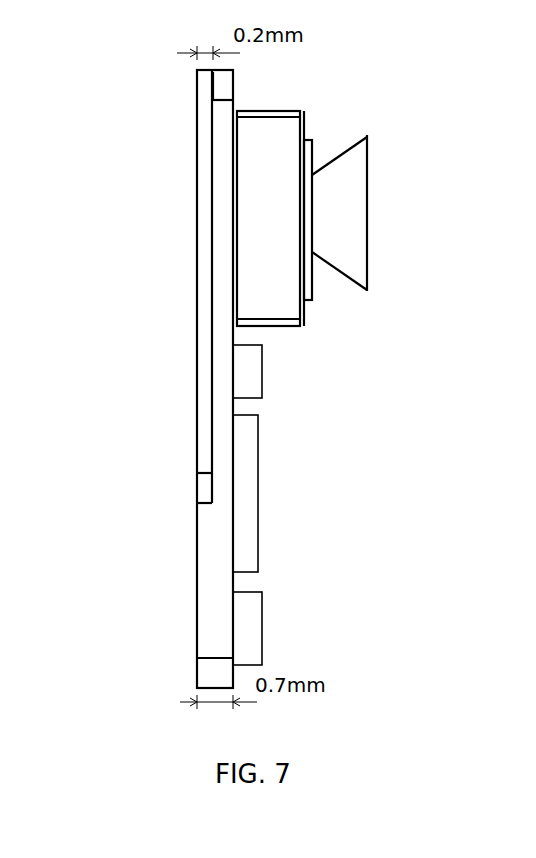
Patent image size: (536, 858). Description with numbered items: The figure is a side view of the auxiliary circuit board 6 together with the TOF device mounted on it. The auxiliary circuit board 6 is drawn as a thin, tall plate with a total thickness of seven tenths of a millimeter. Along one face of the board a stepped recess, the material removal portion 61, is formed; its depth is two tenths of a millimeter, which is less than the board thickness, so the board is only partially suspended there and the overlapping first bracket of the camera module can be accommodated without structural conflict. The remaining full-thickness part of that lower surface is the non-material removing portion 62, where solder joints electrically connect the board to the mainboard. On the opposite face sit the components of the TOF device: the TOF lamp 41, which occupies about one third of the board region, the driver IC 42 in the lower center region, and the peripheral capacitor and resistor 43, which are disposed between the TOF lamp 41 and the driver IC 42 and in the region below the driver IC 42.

The auxiliary circuit board 6 is at (208, 567).
The material removal portion 61 is at (203, 170).
The non-material removing portion 62 is at (220, 283).
The TOF lamp 41 is at (268, 138).
The driver IC 42 is at (247, 500).
The peripheral capacitor and resistor 43 is at (247, 372).